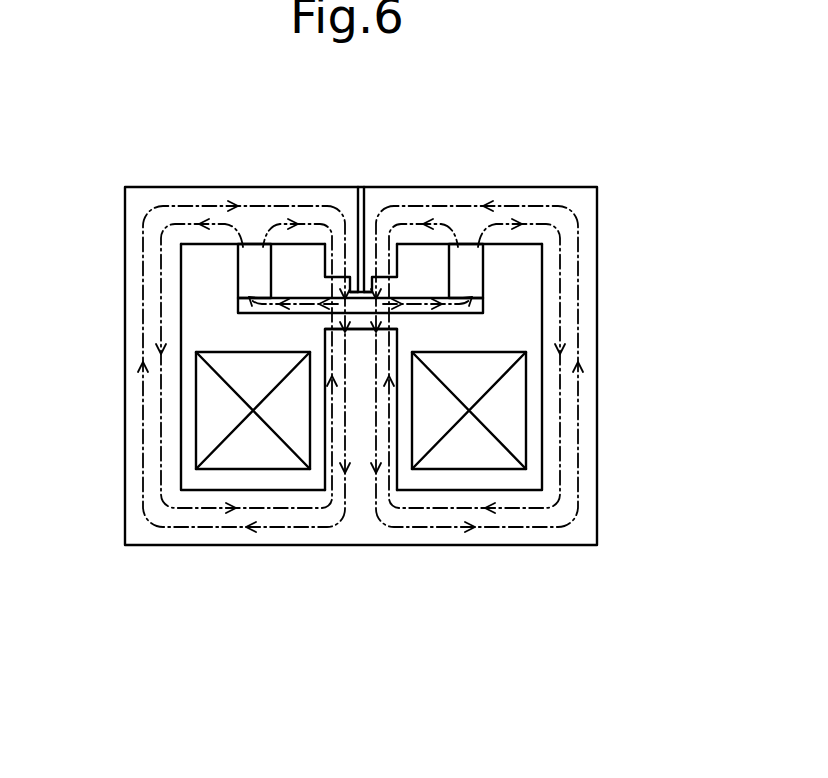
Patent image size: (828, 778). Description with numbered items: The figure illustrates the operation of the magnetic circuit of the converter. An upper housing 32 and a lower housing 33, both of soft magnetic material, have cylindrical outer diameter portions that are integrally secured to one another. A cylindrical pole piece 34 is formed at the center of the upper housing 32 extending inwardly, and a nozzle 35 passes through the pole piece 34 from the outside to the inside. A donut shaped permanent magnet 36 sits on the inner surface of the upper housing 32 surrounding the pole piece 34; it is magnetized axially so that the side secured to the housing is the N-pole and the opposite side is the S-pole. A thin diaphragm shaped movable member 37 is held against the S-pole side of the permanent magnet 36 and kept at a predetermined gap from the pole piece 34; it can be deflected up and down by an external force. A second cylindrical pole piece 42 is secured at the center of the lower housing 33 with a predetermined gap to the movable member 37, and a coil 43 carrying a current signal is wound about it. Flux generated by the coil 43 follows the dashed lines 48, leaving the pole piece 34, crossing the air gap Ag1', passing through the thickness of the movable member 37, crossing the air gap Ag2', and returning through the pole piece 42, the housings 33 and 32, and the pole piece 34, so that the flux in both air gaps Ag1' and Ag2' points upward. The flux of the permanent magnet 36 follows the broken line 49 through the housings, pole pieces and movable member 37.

The upper housing 32 is at (583, 207).
The lower housing 33 is at (583, 532).
The pole piece 34 is at (326, 271).
The nozzle 35 is at (358, 246).
The permanent magnet 36 is at (243, 274).
The movable member 37 is at (258, 312).
The pole piece 42 is at (328, 428).
The coil 43 is at (513, 408).
The dashed lines 48 is at (543, 530).
The broken line 49 is at (435, 512).
The air gap Ag1' is at (413, 198).
The air gap Ag2' is at (511, 310).